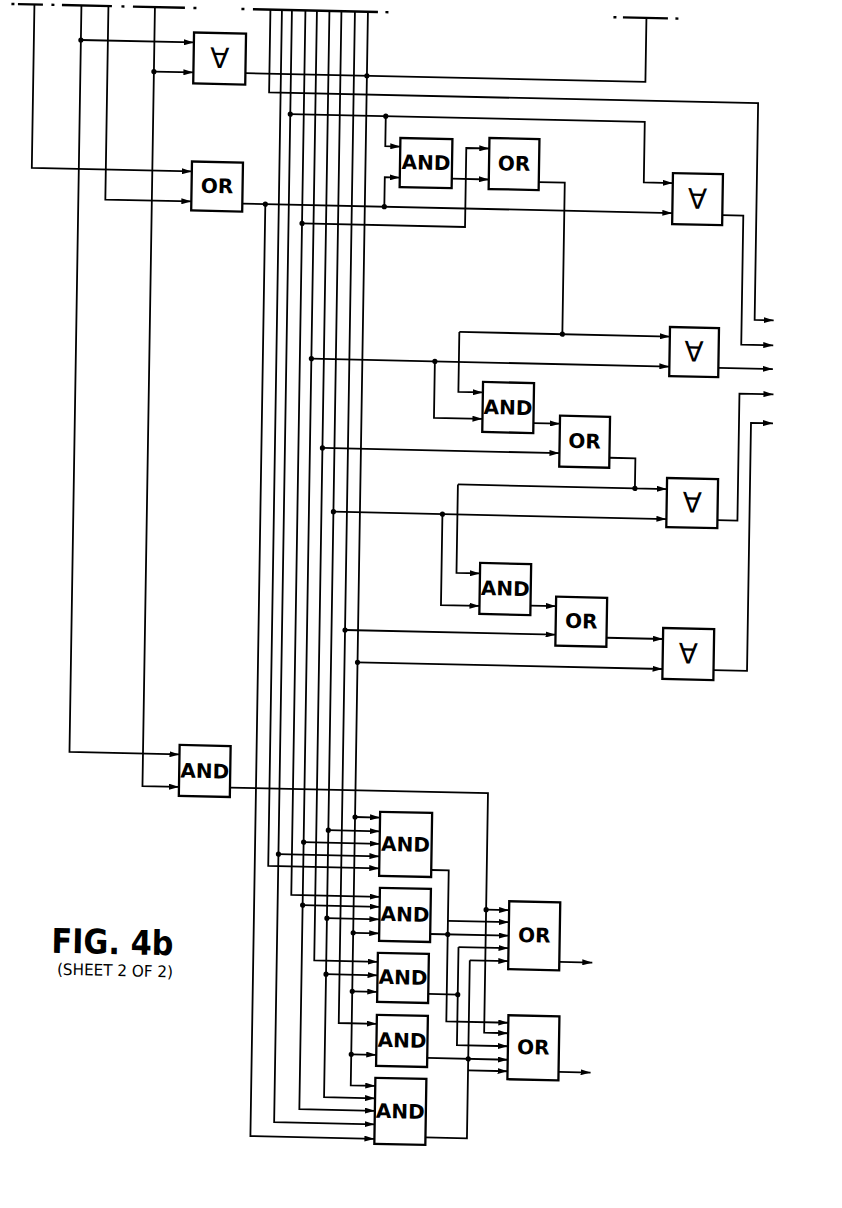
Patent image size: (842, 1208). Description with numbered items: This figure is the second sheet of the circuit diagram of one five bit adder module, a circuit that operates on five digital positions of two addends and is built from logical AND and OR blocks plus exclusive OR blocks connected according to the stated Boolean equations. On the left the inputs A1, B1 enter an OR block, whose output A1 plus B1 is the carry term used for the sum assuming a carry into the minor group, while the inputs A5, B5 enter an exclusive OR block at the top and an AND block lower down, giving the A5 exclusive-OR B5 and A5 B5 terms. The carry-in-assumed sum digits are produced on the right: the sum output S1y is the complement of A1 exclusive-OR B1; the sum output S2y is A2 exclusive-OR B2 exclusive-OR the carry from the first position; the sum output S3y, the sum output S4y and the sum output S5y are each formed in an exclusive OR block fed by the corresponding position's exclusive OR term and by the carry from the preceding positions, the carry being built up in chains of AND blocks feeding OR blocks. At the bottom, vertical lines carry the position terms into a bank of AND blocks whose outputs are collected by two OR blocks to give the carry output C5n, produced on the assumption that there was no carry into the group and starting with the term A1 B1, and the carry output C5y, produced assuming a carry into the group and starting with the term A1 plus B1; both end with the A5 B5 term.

The first digital position input A A1 is at (113, 87).
The first digital position input B B1 is at (149, 103).
The fifth digital position input A A5 is at (131, 379).
The fifth digital position input B B5 is at (167, 397).
The first sum output assuming carry in S1y is at (769, 305).
The second sum output assuming carry in S2y is at (747, 280).
The third sum output assuming carry in S3y is at (745, 357).
The fourth sum output assuming carry in S4y is at (745, 447).
The fifth sum output assuming carry in S5y is at (744, 535).
The carry output assuming no carry in C5n is at (589, 963).
The carry output assuming carry in C5y is at (587, 1073).